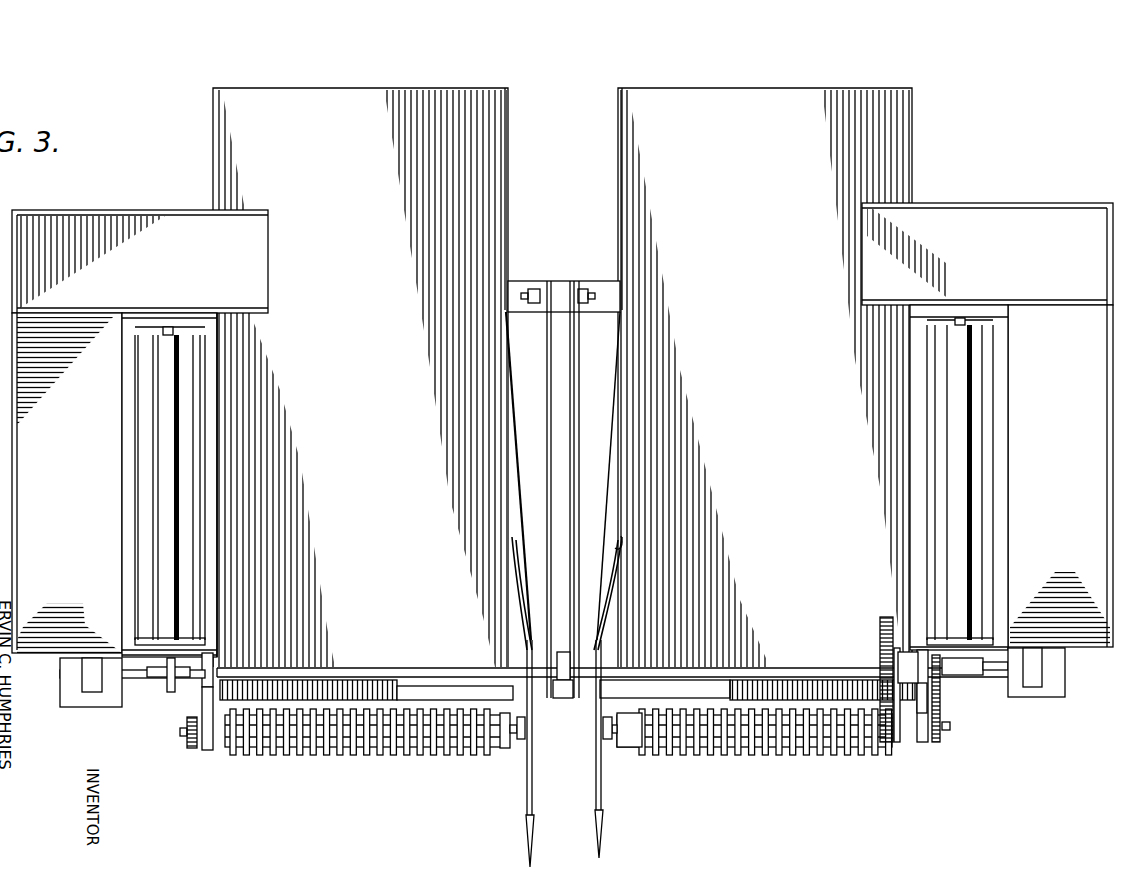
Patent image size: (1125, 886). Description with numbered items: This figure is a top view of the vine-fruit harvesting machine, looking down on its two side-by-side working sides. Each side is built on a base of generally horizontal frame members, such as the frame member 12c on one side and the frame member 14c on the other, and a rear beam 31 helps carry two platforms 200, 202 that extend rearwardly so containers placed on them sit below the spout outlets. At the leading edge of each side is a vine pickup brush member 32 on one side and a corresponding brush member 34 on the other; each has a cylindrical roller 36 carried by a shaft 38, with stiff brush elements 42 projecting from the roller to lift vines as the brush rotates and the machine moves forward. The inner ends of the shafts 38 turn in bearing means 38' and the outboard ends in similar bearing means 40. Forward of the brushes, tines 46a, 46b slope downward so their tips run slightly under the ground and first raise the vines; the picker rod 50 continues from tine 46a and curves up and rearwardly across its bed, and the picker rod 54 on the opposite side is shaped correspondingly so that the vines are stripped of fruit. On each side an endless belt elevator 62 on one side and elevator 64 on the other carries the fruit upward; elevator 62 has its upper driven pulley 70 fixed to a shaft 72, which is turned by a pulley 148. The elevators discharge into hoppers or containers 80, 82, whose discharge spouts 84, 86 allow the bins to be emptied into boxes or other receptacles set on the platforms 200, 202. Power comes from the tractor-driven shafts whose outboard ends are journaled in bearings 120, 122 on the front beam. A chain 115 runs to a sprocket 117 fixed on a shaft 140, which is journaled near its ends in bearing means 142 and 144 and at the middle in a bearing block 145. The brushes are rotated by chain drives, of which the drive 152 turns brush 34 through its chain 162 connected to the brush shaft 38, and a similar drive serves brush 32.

The platform 200 is at (356, 352).
The platform 202 is at (765, 364).
The rear beam 31 is at (519, 284).
The horizontal frame member 12c is at (516, 512).
The horizontal frame member 14c is at (611, 494).
The picker rod 50 is at (527, 603).
The picker rod 54 is at (624, 538).
The discharge spout 84 is at (232, 267).
The hopper or container 80 is at (78, 496).
The upper driven pulley 70 is at (165, 418).
The shaft 72 is at (168, 326).
The fruit elevating assembly 62 is at (220, 473).
The discharge spout 86 is at (961, 256).
The hopper or container 82 is at (1060, 494).
The fruit elevating assembly 64 is at (905, 450).
The shaft 140 is at (373, 670).
The bearing block 145 is at (563, 699).
The vine pickup roller or brush member 32 is at (366, 755).
The vine pickup roller or brush member 34 is at (754, 752).
The brush elements 42 is at (382, 756).
The roller 36 is at (498, 752).
The bearing means 38' is at (552, 758).
The tine 46a is at (526, 835).
The tine 46b is at (603, 836).
The bearing means 142 is at (208, 665).
The bearing means 40 is at (208, 750).
The shaft 38 is at (572, 746).
The bearing 120 is at (92, 695).
The pulley 148 is at (157, 668).
The bearing means 144 is at (171, 693).
The sprocket 117 is at (880, 650).
The chain 115 is at (886, 618).
The chain 162 is at (937, 745).
The chain drive 152 is at (952, 706).
The bearing 122 is at (1033, 692).